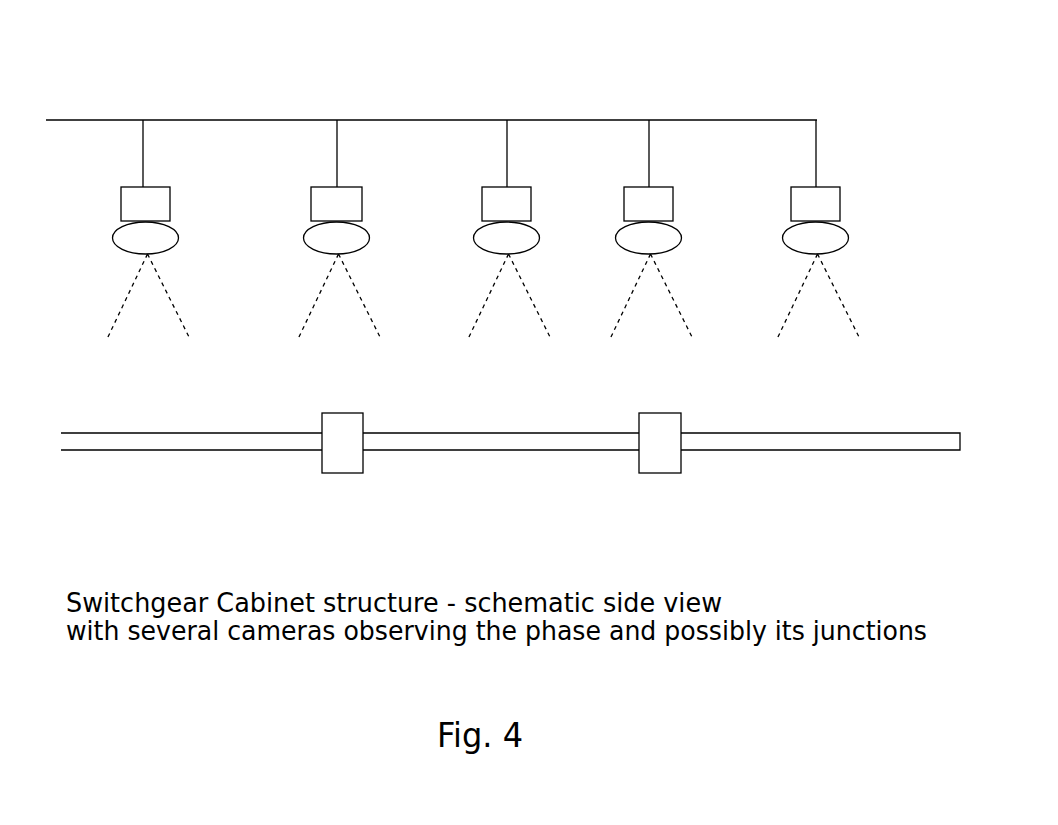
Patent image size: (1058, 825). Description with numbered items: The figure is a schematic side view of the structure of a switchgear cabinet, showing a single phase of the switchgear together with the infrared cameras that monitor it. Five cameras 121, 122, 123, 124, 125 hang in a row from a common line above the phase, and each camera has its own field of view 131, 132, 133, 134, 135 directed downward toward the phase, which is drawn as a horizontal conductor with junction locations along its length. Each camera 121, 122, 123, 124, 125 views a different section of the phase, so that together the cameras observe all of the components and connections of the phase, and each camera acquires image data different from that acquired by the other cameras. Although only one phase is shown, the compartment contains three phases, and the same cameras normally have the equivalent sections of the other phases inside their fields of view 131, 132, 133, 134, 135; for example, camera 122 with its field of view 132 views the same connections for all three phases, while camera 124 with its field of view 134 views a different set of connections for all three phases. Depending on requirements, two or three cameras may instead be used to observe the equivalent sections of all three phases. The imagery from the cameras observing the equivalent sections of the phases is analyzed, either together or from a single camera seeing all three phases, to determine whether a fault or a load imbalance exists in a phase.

The camera 121 is at (157, 187).
The camera 122 is at (345, 187).
The camera 123 is at (519, 187).
The camera 124 is at (658, 187).
The camera 125 is at (832, 187).
The field of view 131 is at (149, 194).
The field of view 132 is at (336, 178).
The field of view 133 is at (510, 194).
The field of view 134 is at (649, 178).
The field of view 135 is at (819, 194).